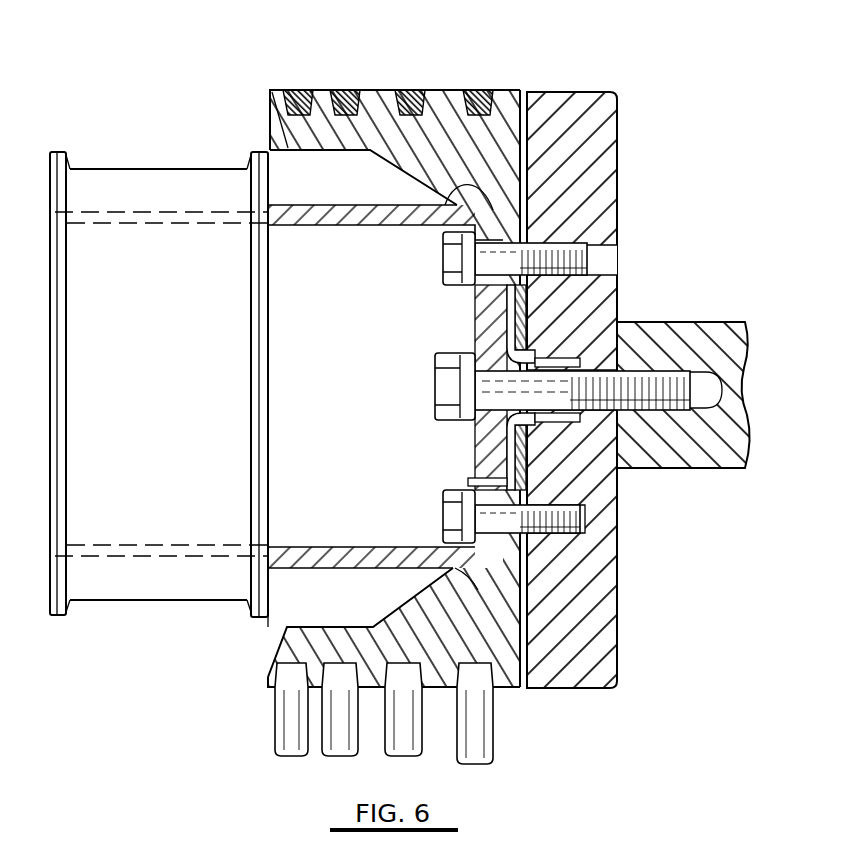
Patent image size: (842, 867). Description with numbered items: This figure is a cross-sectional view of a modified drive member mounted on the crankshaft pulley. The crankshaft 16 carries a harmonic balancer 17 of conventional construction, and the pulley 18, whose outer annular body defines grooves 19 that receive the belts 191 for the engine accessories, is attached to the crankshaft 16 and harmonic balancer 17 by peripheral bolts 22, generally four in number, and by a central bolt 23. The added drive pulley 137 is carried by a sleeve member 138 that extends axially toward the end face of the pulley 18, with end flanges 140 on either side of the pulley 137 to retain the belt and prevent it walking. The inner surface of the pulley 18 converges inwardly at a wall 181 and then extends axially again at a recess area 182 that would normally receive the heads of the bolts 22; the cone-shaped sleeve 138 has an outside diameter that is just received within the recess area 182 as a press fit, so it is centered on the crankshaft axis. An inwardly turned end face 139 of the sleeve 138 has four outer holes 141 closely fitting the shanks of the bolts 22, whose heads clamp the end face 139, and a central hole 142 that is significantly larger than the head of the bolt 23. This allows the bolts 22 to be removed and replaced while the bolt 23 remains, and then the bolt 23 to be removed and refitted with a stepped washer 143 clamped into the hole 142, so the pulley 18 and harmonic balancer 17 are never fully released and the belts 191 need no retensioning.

The crankshaft 16 is at (697, 434).
The harmonic balancer 17 is at (594, 154).
The pulley 18 is at (502, 110).
The grooves 19 is at (362, 97).
The bolts 22 is at (587, 268).
The central bolt 23 is at (638, 380).
The pulley 137 is at (156, 158).
The sleeve member 138 is at (332, 548).
The end face 139 is at (478, 292).
The end flanges 140 is at (58, 610).
The outer holes 141 is at (440, 194).
The central hole 142 is at (467, 484).
The washer 143 is at (487, 434).
The wall 181 is at (393, 612).
The recess area 182 is at (466, 569).
The belts 191 is at (300, 87).